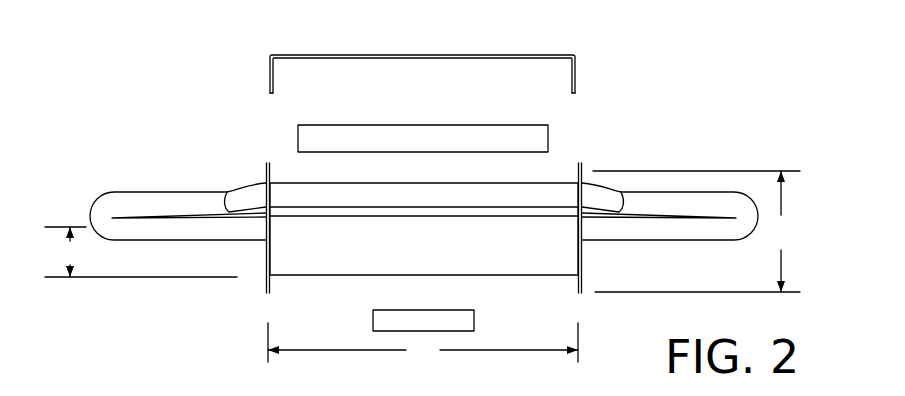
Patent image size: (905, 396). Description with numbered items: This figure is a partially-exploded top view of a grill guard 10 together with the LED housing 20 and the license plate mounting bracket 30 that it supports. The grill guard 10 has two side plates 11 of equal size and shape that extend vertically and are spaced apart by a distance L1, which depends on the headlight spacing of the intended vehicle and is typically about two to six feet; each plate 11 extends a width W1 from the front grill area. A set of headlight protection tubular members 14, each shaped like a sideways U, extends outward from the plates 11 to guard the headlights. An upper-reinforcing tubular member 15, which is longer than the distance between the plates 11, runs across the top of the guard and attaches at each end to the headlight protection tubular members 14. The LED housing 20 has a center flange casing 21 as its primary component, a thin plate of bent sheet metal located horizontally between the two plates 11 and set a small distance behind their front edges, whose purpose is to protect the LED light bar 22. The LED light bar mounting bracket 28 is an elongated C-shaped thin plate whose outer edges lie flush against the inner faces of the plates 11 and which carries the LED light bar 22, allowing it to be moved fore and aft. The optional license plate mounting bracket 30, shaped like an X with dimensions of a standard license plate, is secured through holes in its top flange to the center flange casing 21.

The grill guard 10 is at (168, 68).
The side plates 11 is at (264, 268).
The headlight protection tubular members 14 is at (169, 200).
The upper-reinforcing tubular member 15 is at (396, 190).
The LED housing 20 is at (553, 289).
The center flange casing 21 is at (361, 265).
The LED light bar 22 is at (441, 130).
The LED light bar mounting bracket 28 is at (361, 56).
The license plate mounting bracket 30 is at (387, 318).